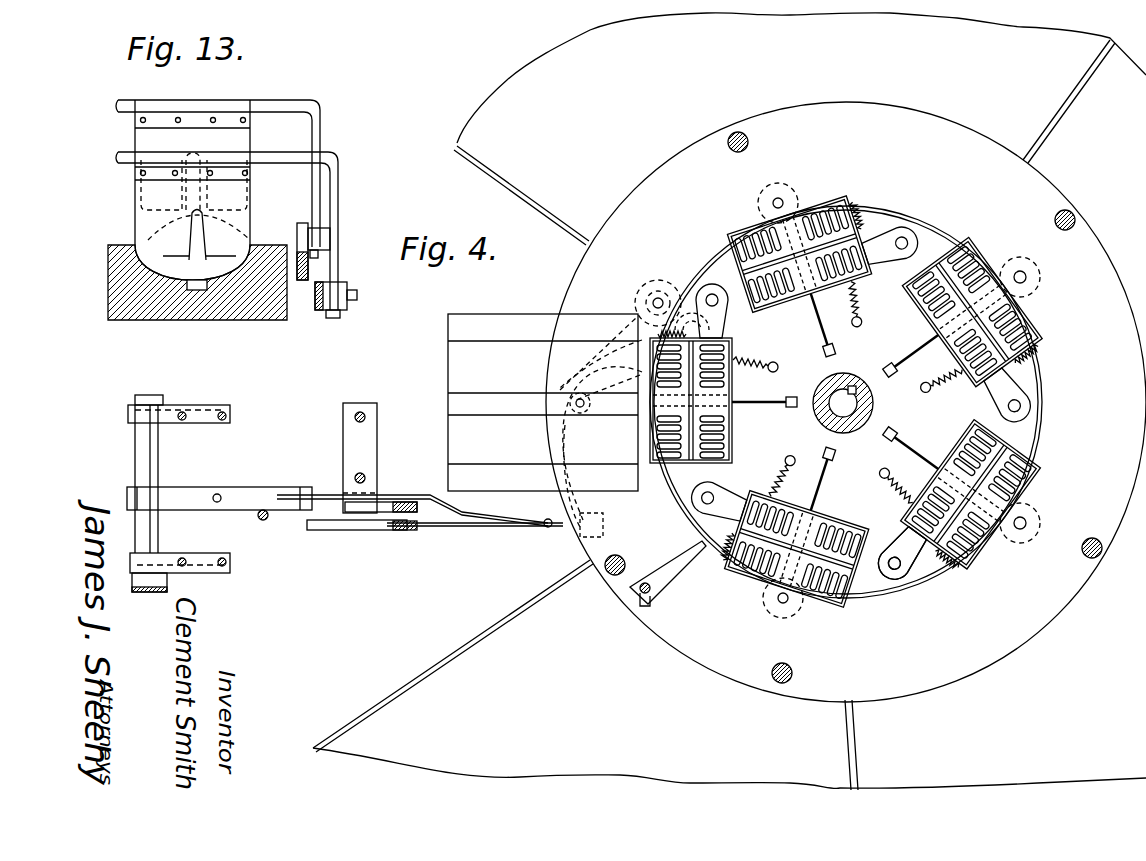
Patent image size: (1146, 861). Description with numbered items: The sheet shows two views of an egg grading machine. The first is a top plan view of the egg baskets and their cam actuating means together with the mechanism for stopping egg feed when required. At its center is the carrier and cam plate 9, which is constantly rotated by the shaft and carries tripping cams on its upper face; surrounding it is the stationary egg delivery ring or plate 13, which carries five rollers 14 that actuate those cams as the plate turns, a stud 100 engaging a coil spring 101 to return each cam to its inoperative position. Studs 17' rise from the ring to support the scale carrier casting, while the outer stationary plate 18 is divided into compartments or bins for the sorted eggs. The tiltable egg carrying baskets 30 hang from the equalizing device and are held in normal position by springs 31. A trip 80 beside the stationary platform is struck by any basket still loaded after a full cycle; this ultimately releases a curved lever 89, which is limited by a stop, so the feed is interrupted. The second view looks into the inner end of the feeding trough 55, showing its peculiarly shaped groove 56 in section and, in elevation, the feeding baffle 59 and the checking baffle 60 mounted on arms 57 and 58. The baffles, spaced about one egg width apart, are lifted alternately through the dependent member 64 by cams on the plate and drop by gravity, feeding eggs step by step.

In FIG. 4, the carrier and cam plate 9 is at (894, 539).
In FIG. 4, the egg delivery ring or plate 13 is at (862, 125).
In FIG. 4, the rollers 14 is at (1032, 523).
In FIG. 4, the studs 17' is at (805, 674).
In FIG. 4, the plate 18 is at (729, 401).
In FIG. 4, the egg carrying baskets 30 is at (732, 432).
In FIG. 4, the springs 31 is at (957, 567).
In FIG. 13, the feeding trough 55 is at (215, 322).
In FIG. 4, the feeding trough 55 is at (448, 366).
In FIG. 13, the groove 56 is at (197, 273).
In FIG. 13, the arm 57 is at (337, 197).
In FIG. 13, the arm 58 is at (322, 133).
In FIG. 13, the feeding baffle plate 59 is at (245, 212).
In FIG. 13, the checking baffle plate 60 is at (240, 138).
In FIG. 4, the dependent member 64 is at (367, 453).
In FIG. 4, the trip 80 is at (672, 567).
In FIG. 4, the curved lever 89 is at (238, 490).
In FIG. 4, the stud 100 is at (774, 362).
In FIG. 4, the coil spring 101 is at (862, 293).